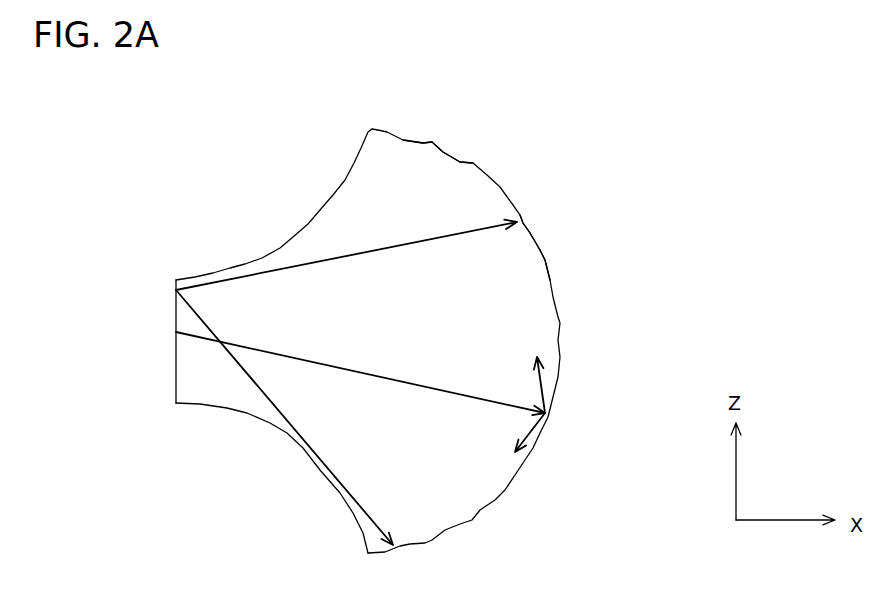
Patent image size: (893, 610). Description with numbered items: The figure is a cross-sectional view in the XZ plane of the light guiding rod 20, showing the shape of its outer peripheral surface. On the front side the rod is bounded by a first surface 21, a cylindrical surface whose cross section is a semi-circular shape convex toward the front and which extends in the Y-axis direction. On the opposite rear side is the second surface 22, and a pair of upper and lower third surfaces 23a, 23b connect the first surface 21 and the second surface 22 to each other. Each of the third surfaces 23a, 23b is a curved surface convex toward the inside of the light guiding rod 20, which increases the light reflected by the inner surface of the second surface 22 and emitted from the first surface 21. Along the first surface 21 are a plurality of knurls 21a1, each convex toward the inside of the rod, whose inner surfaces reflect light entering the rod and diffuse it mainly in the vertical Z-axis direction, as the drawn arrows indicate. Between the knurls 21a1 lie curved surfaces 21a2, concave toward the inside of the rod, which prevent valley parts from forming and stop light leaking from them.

The light guiding rod 20 is at (529, 92).
The first surface 21 is at (560, 320).
The knurls 21a1 is at (405, 140).
The curved surfaces 21a2 is at (428, 143).
The second surface 22 is at (176, 348).
The upper third surface 23a is at (327, 217).
The lower third surface 23b is at (323, 468).